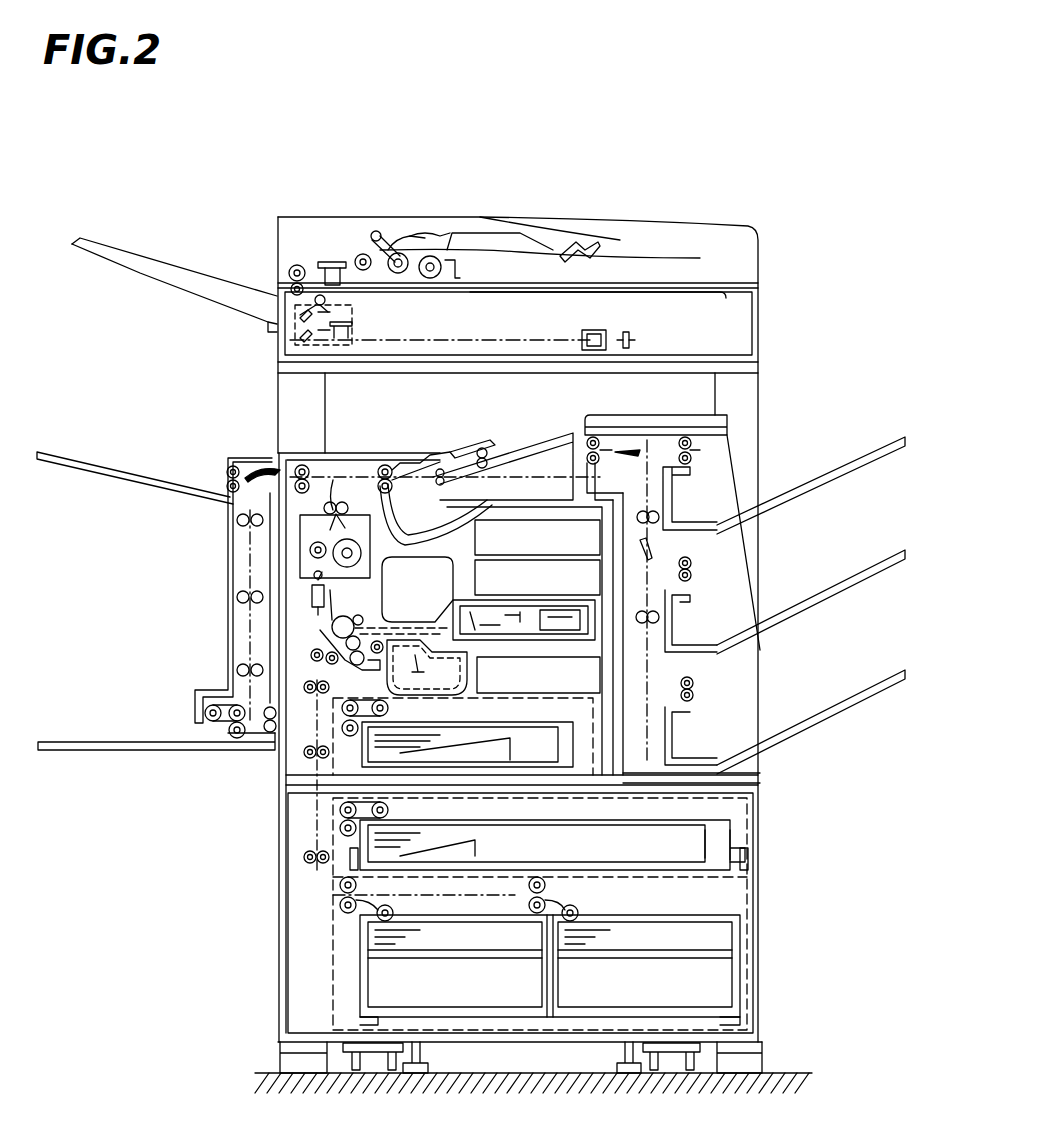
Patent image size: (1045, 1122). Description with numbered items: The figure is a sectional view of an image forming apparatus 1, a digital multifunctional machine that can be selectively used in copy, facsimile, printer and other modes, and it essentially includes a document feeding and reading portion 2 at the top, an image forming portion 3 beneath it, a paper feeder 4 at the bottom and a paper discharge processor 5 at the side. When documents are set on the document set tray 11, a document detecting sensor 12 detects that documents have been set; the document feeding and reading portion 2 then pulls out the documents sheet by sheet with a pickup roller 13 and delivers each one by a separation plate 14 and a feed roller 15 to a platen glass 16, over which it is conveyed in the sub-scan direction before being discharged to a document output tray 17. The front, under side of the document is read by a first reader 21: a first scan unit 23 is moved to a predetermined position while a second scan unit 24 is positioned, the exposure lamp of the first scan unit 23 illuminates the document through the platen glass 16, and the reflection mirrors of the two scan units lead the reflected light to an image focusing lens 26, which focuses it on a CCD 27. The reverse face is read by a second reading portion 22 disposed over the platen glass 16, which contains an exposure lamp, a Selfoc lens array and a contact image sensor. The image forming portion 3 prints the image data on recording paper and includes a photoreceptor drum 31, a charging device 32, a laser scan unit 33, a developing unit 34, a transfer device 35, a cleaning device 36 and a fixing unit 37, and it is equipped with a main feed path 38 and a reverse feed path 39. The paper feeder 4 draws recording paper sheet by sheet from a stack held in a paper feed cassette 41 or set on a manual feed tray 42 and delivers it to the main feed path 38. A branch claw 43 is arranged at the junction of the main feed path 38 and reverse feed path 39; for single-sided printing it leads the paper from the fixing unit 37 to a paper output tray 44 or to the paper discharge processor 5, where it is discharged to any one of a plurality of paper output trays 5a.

The image forming apparatus 1 is at (552, 80).
The document feeding and reading portion 2 is at (832, 286).
The image forming portion 3 is at (293, 420).
The paper feeder 4 is at (248, 912).
The paper discharge processor 5 is at (846, 412).
The paper output trays 5a is at (840, 570).
The document set tray 11 is at (507, 252).
The document detecting sensor 12 is at (585, 248).
The pickup roller 13 is at (432, 280).
The separation plate 14 is at (380, 245).
The feed roller 15 is at (398, 275).
The platen glass 16 is at (688, 300).
The document output tray 17 is at (134, 258).
The first reader 21 is at (750, 338).
The second reading portion 22 is at (330, 266).
The first scan unit 23 is at (342, 326).
The second scan unit 24 is at (290, 340).
The image focusing lens 26 is at (598, 336).
The CCD 27 is at (632, 336).
The photoreceptor drum 31 is at (362, 628).
The charging device 32 is at (375, 612).
The laser scan unit 33 is at (492, 605).
The developing unit 34 is at (470, 678).
The transfer device 35 is at (313, 597).
The cleaning device 36 is at (393, 540).
The fixing unit 37 is at (300, 550).
The main feed path 38 is at (320, 672).
The reverse feed path 39 is at (243, 600).
The paper feed cassette 41 is at (732, 835).
The manual feed tray 42 is at (94, 740).
The branch claw 43 is at (333, 478).
The paper output tray 44 is at (520, 445).